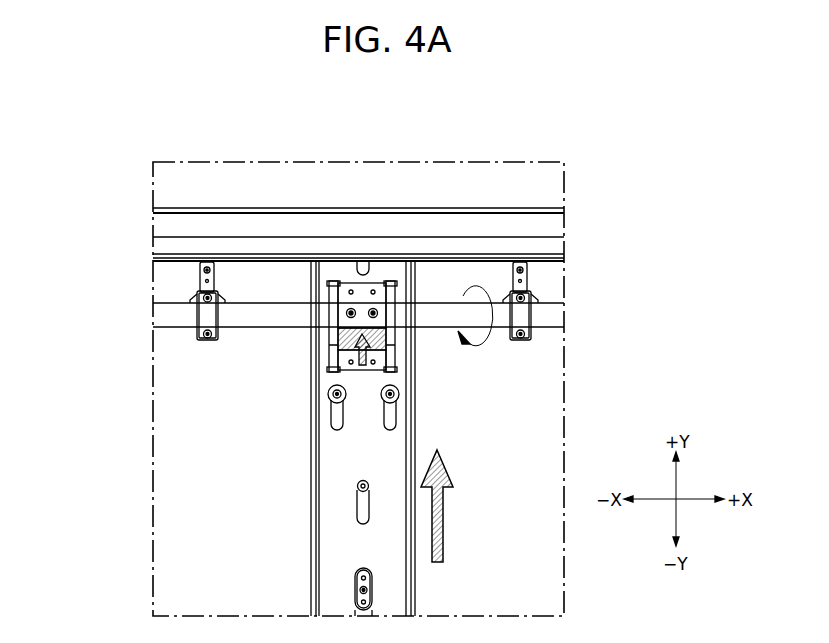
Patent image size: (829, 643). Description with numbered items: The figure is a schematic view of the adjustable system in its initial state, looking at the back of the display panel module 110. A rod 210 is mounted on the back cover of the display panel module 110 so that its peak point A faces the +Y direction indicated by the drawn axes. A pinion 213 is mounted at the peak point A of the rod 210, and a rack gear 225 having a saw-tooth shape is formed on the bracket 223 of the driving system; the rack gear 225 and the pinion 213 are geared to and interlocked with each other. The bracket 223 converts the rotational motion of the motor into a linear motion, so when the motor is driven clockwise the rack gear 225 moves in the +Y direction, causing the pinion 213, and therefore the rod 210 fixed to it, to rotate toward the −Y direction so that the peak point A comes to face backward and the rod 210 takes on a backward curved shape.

The display panel module 110 is at (178, 477).
The rod 210 is at (550, 316).
The pinion 213 is at (363, 307).
The bracket 223 is at (325, 574).
The rack gear 225 is at (338, 348).
The peak point A is at (401, 329).